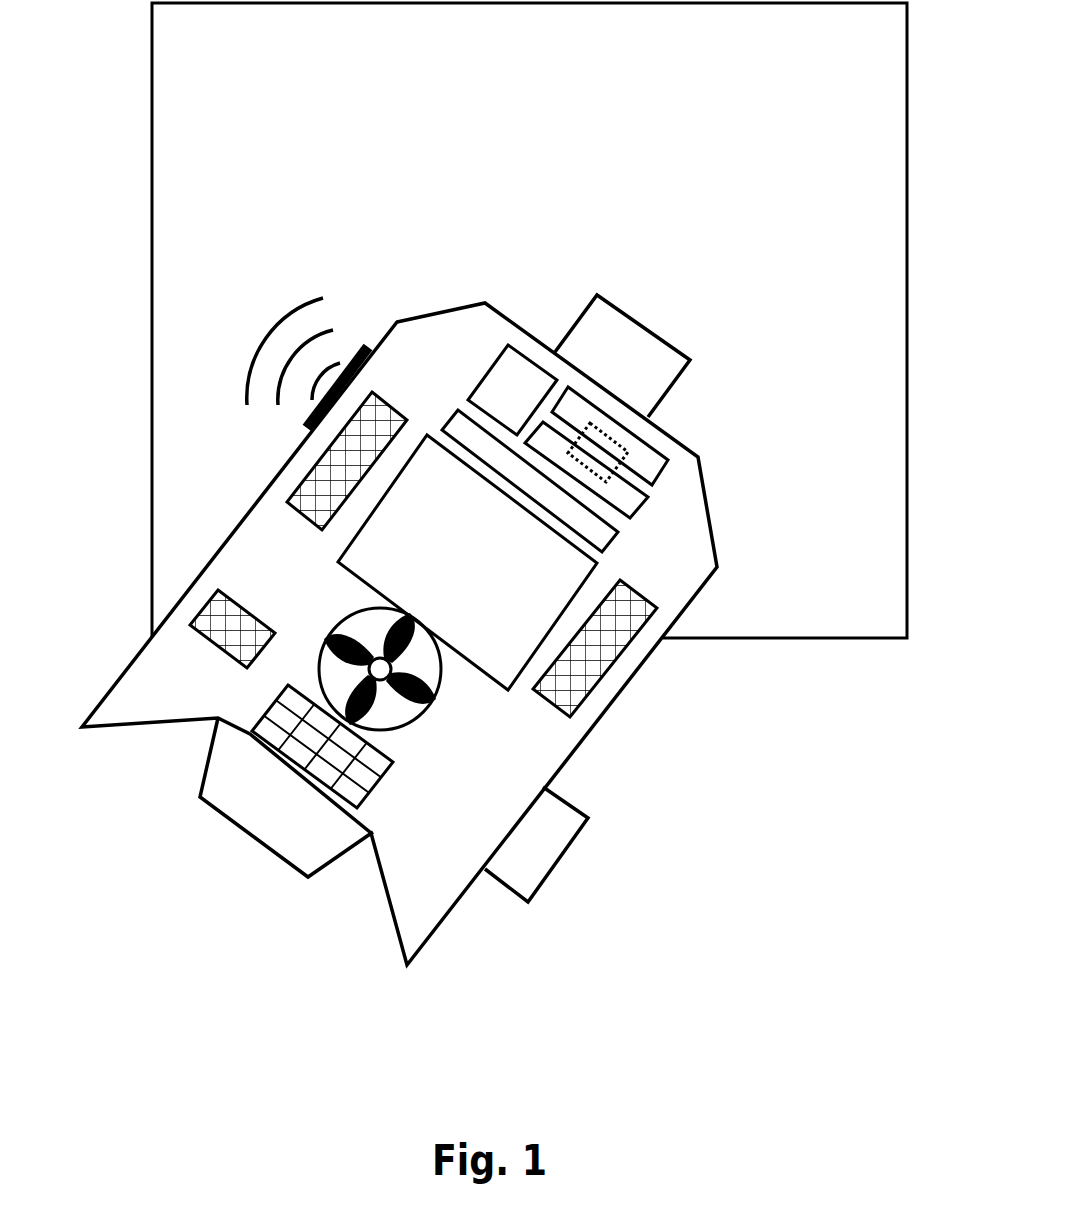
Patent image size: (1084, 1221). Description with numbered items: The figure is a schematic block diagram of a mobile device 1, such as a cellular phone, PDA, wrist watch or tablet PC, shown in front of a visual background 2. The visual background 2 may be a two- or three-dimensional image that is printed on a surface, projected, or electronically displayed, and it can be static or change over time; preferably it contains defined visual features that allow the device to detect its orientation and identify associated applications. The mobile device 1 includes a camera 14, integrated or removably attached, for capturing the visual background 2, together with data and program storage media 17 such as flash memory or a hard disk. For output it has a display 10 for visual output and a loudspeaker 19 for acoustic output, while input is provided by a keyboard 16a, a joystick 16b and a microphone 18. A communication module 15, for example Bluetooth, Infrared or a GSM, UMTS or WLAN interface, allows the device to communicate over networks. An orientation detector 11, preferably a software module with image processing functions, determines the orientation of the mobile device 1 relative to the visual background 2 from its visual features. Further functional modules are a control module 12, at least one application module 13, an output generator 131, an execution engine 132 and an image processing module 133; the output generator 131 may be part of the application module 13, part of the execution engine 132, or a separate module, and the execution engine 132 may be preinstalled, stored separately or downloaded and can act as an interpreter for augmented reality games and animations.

The mobile device 1 is at (336, 913).
The visual background 2 is at (863, 625).
The display 10 is at (580, 567).
The orientation detector 11 is at (650, 352).
The control module 12 is at (497, 370).
The application module 13 is at (650, 465).
The output generator 131 is at (597, 452).
The execution engine 132 is at (632, 505).
The image processing module 133 is at (605, 537).
The camera 14 is at (253, 822).
The communication module 15 is at (305, 425).
The keyboard 16a is at (270, 728).
The joystick 16b is at (392, 712).
The data and program storage media 17 is at (540, 865).
The microphone 18 is at (210, 620).
The loudspeaker 19 is at (607, 673).